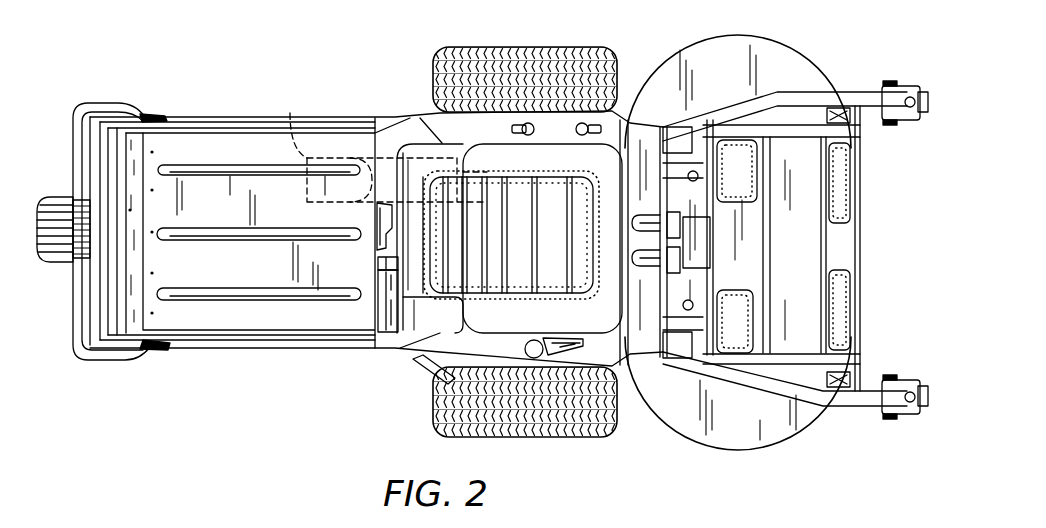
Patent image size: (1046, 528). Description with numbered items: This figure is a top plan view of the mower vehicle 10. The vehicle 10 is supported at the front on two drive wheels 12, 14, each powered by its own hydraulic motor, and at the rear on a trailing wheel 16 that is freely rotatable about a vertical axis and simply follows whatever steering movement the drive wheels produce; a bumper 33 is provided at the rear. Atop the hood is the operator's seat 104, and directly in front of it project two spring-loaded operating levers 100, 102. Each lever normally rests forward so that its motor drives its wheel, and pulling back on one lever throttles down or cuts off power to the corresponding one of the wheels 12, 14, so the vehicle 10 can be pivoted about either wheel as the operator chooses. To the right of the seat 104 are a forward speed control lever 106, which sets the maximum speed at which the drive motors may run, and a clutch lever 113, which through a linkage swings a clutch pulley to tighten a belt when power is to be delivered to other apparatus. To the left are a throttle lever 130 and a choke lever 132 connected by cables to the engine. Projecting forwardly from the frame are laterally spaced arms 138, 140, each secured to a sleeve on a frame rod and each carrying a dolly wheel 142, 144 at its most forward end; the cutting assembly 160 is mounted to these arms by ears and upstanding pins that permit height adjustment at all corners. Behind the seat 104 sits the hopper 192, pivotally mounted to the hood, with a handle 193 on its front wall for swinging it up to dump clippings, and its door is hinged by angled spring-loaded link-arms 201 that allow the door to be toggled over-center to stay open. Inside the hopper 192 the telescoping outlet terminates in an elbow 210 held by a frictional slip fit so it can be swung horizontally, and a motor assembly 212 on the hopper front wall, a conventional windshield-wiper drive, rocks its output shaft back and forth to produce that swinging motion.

The vehicle 10 is at (236, 67).
The drive wheel 12 is at (582, 48).
The drive wheel 14 is at (430, 418).
The trailing wheel 16 is at (70, 263).
The bumper 33 is at (103, 101).
The operating lever 100 is at (683, 264).
The operating lever 102 is at (683, 222).
The seat 104 is at (407, 254).
The forward speed control lever 106 is at (562, 351).
The clutch lever 113 is at (417, 374).
The throttle lever 130 is at (634, 120).
The choke lever 132 is at (512, 128).
The arm 138 is at (848, 93).
The arm 140 is at (873, 408).
The dolly wheel 142 is at (927, 116).
The dolly wheel 144 is at (925, 418).
The cutting assembly 160 is at (688, 437).
The hopper 192 is at (338, 126).
The handle 193 is at (375, 223).
The spring-loaded link-arms 201 is at (143, 113).
The elbow 210 is at (290, 113).
The motor assembly 212 is at (392, 311).